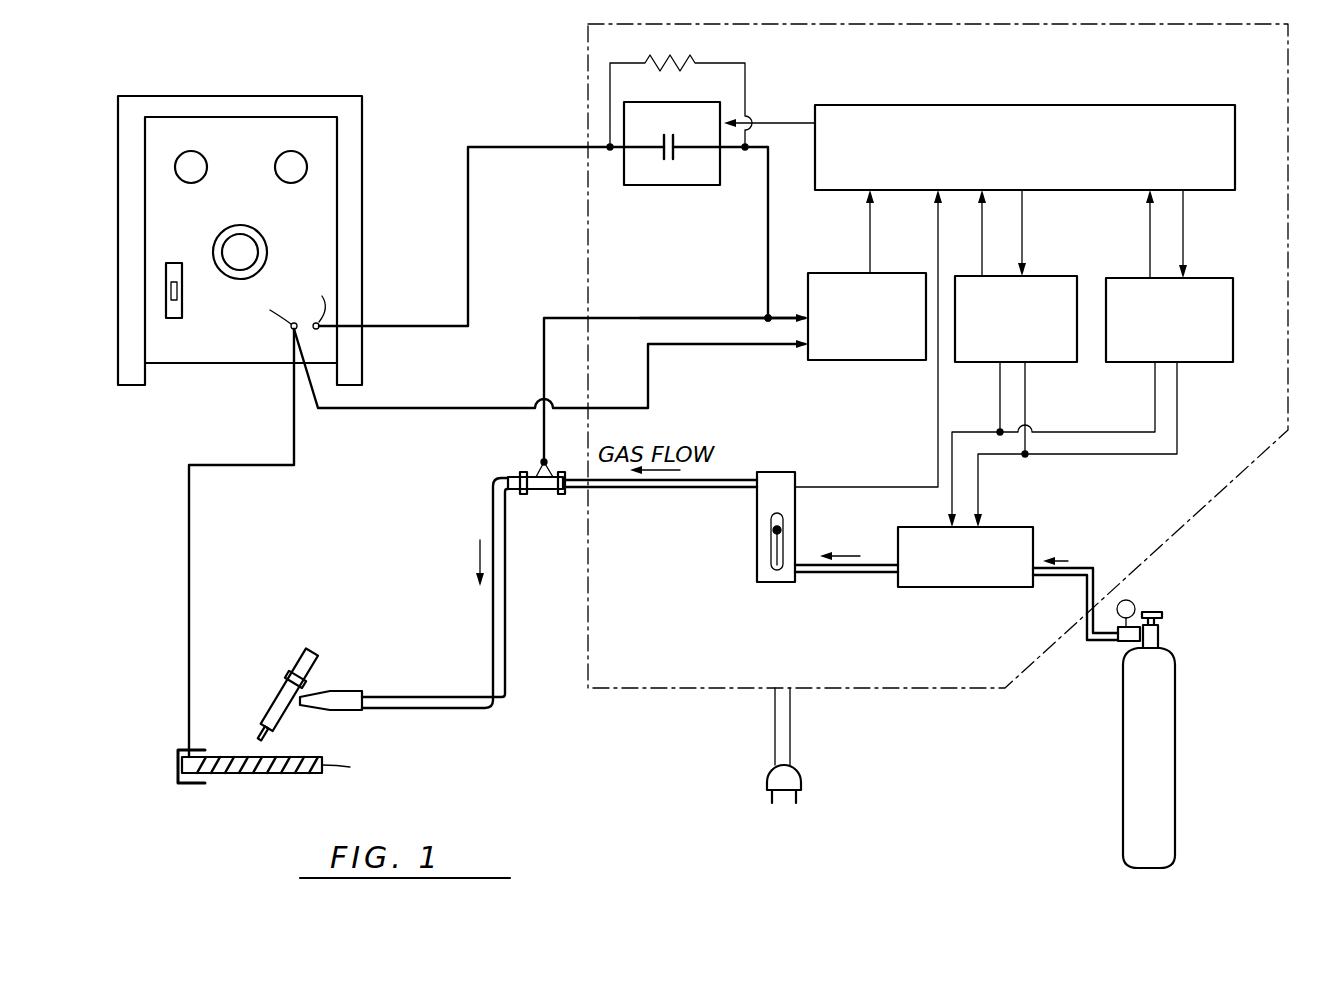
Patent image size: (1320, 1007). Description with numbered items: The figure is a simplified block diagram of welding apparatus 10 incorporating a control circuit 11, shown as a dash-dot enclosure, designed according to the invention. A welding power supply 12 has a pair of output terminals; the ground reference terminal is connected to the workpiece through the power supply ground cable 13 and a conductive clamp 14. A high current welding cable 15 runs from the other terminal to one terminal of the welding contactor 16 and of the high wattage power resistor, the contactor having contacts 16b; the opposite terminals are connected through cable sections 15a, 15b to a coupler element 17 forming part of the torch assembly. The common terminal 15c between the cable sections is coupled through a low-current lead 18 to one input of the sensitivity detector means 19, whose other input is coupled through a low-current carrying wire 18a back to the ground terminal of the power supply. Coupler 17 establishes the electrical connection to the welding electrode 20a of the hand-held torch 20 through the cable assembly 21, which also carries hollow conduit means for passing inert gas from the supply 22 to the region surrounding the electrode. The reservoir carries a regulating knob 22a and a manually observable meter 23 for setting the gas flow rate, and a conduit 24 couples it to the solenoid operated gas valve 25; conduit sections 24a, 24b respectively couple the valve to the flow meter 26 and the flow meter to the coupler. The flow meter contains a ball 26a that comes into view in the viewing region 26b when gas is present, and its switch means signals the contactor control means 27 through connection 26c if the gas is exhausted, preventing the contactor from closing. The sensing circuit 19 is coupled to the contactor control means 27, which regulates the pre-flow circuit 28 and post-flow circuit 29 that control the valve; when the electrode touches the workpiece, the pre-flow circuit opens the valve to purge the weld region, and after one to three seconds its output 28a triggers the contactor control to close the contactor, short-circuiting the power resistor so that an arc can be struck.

The welding apparatus 10 is at (708, 764).
The control circuit 11 is at (588, 88).
The welding power supply 12 is at (118, 234).
The power supply ground cable 13 is at (189, 546).
The conductive clamp 14 is at (178, 759).
The high current welding cable 15 is at (466, 246).
The cable section 15a is at (766, 266).
The cable section 15b is at (543, 350).
The common terminal 15c is at (762, 316).
The welding contactor 16 is at (706, 130).
The contactor contacts 16b is at (692, 126).
The coupler element 17 is at (556, 494).
The low-current lead 18 is at (772, 318).
The low-current carrying wire 18a is at (648, 393).
The sensitivity detector means 19 is at (845, 292).
The torch 20 is at (325, 669).
The welding electrode 20a is at (256, 739).
The cable assembly 21 is at (493, 612).
The inert gas supply 22 is at (1162, 771).
The regulating knob 22a is at (1160, 622).
The manually observable meter 23 is at (1133, 603).
The conduit 24 is at (1094, 588).
The conduit section 24a is at (872, 560).
The conduit section 24b is at (634, 492).
The solenoid operated gas valve 25 is at (965, 586).
The flow meter 26 is at (746, 557).
The ball 26a is at (771, 530).
The viewing region 26b is at (771, 552).
The connection 26c is at (898, 488).
The contactor control means 27 is at (1025, 147).
The pre-flow control circuit 28 is at (1042, 275).
The output of pre-flow circuit 28a is at (983, 266).
The post-flow control circuit 29 is at (1200, 275).